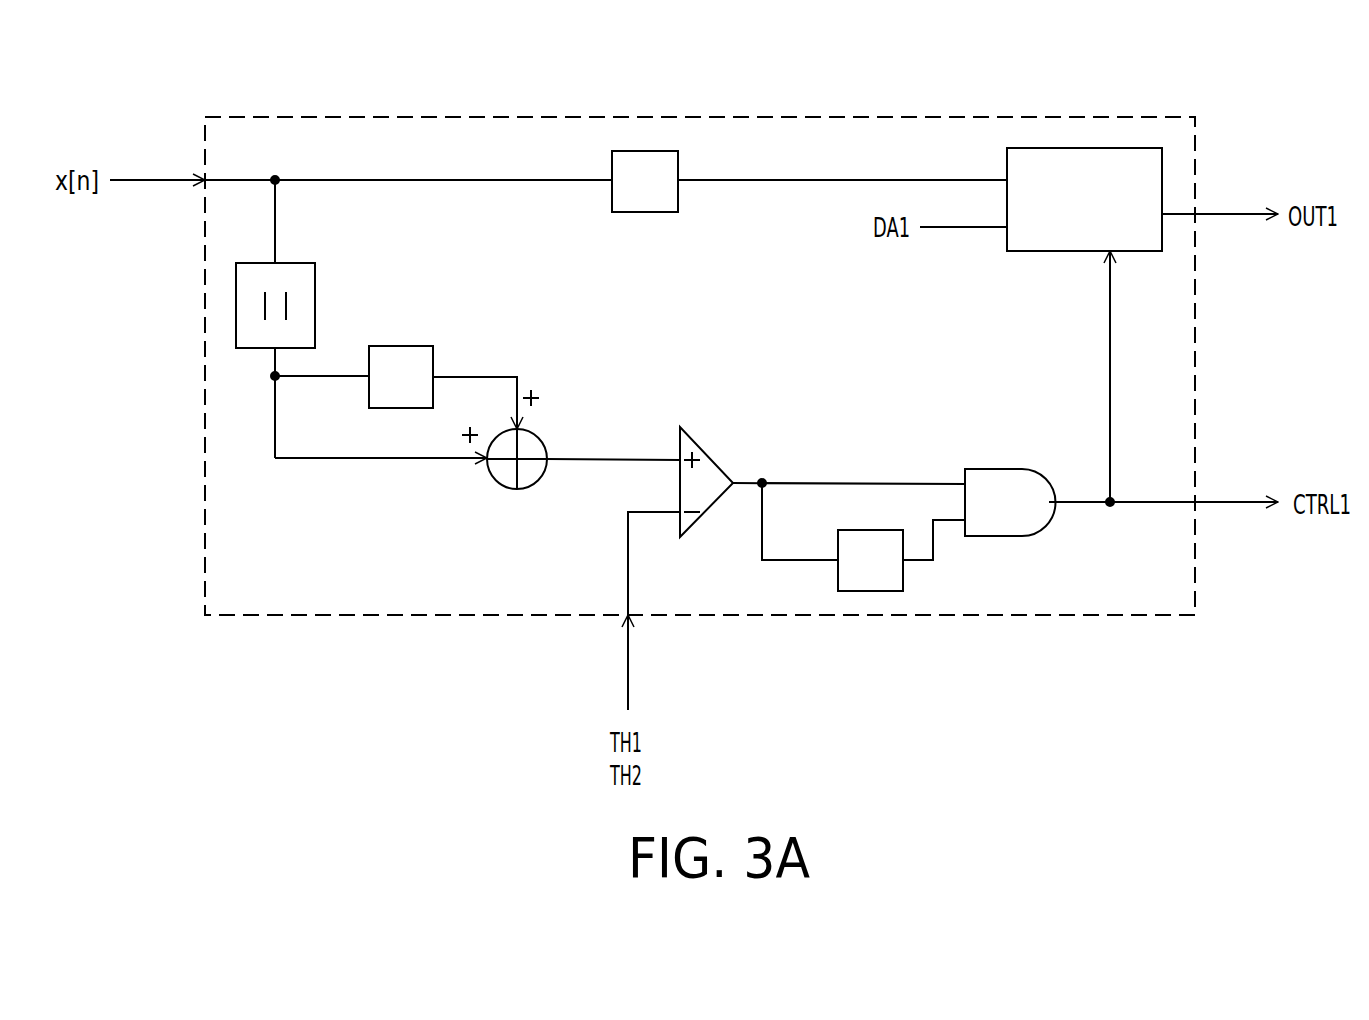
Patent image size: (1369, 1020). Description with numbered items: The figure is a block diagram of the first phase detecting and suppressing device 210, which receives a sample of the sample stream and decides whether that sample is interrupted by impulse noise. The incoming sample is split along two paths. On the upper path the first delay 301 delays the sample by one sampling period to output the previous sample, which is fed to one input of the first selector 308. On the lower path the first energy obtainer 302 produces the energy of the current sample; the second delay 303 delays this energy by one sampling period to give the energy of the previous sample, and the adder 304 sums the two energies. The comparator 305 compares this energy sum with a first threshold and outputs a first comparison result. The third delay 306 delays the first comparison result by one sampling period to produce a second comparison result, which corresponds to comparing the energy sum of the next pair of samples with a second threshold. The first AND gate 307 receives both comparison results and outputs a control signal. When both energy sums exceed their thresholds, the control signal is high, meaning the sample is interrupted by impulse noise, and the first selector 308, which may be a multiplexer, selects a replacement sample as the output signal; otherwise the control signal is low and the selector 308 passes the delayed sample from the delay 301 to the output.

The first phase detecting and suppressing device 210 is at (1019, 617).
The first delay 301 is at (643, 212).
The first energy obtainer 302 is at (296, 263).
The second delay 303 is at (390, 346).
The adder 304 is at (540, 440).
The comparator 305 is at (697, 447).
The third delay 306 is at (869, 530).
The first AND gate 307 is at (985, 466).
The first selector 308 is at (1083, 148).